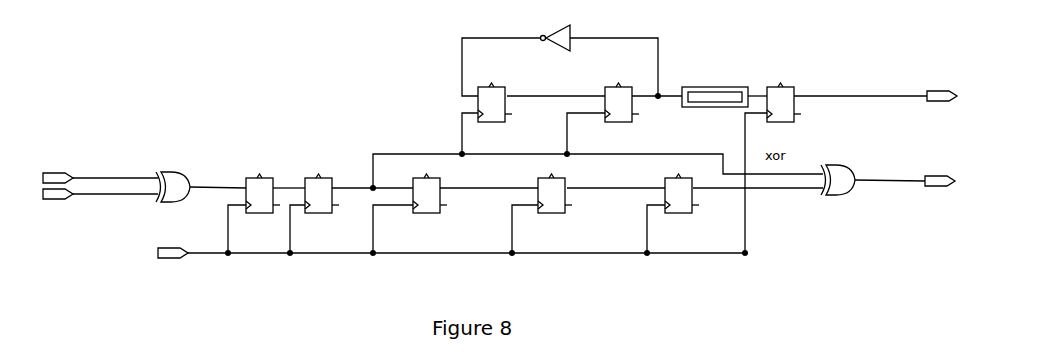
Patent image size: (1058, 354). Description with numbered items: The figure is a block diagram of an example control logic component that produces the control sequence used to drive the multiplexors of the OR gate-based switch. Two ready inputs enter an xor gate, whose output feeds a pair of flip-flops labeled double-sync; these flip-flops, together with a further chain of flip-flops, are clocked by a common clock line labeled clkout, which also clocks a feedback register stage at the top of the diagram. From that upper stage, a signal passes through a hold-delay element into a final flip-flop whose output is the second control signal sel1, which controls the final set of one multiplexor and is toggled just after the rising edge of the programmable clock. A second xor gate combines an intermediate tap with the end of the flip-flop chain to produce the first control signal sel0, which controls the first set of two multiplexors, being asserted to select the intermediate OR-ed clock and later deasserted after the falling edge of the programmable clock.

The XOR gate xor is at (200, 177).
The double synchronizer flip-flops double-sync is at (320, 203).
The output clock input clkout is at (428, 251).
The second control signal sel1 is at (875, 85).
The first control signal sel0 is at (905, 170).